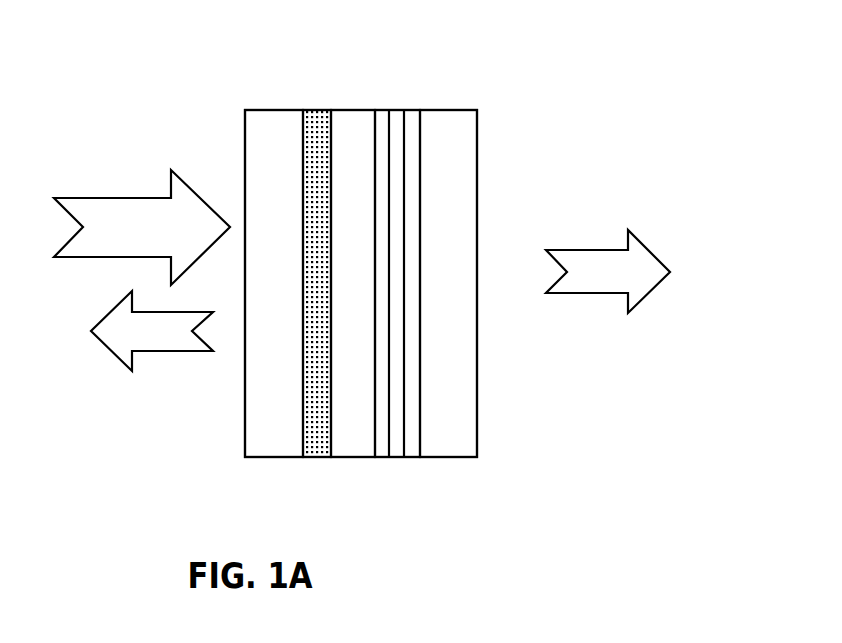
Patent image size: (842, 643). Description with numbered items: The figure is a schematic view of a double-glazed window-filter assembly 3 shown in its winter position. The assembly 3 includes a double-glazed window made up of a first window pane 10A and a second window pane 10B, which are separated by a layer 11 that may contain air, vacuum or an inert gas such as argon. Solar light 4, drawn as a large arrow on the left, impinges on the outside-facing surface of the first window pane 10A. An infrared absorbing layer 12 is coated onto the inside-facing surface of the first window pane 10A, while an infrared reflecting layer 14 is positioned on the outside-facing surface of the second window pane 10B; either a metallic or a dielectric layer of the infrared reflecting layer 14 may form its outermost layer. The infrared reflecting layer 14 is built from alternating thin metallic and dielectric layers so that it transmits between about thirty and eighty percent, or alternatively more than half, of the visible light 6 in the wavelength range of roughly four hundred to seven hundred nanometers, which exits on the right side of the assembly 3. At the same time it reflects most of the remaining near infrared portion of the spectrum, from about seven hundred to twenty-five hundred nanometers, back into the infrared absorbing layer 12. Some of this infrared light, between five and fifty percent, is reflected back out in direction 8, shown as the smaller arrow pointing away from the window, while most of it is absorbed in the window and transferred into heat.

The double-glazed window-filter assembly 3 is at (520, 128).
The solar light 4 is at (100, 198).
The visible light 6 is at (586, 250).
The direction of reflected infrared light 8 is at (180, 351).
The first window pane 10A is at (266, 120).
The second window pane 10B is at (436, 120).
The layer 11 is at (352, 120).
The infrared absorbing layer 12 is at (320, 450).
The infrared reflecting layer 14 is at (395, 450).